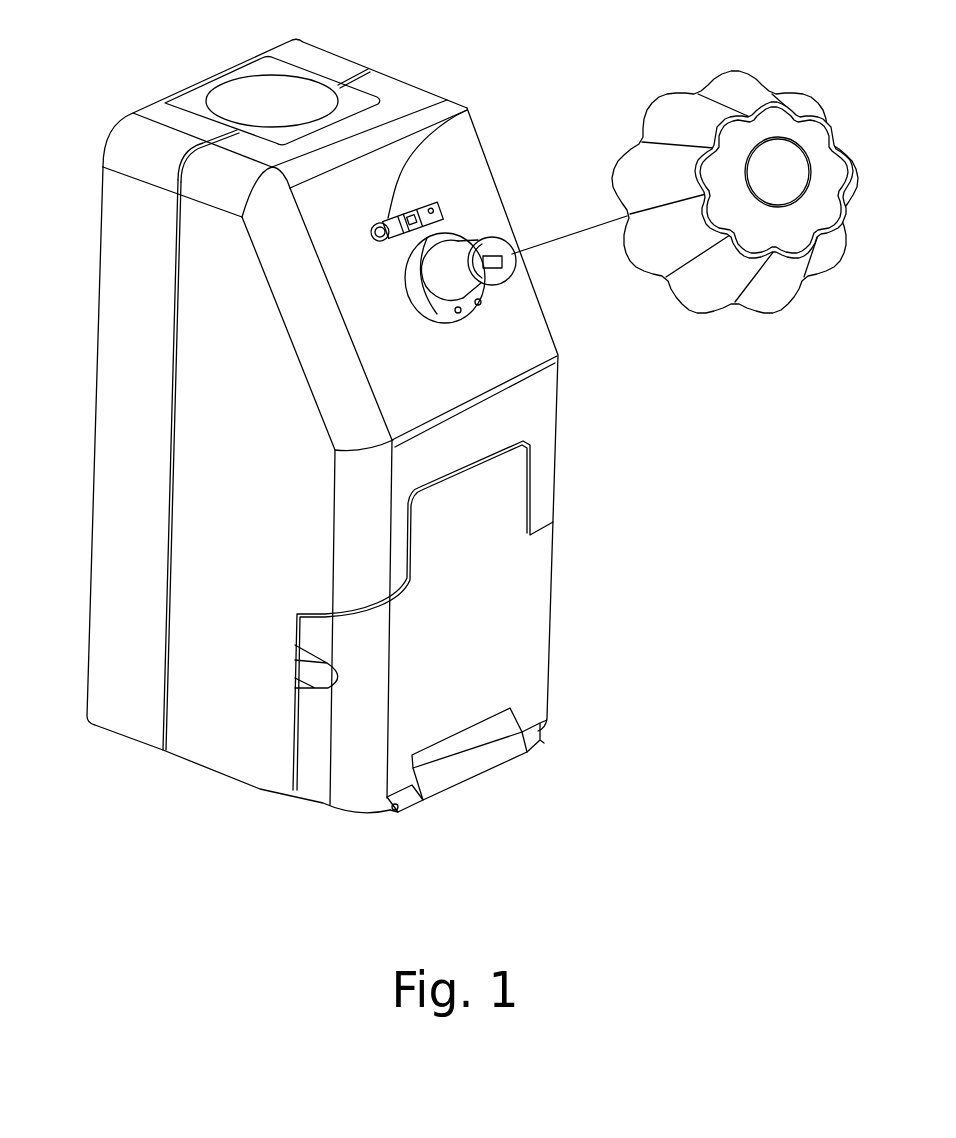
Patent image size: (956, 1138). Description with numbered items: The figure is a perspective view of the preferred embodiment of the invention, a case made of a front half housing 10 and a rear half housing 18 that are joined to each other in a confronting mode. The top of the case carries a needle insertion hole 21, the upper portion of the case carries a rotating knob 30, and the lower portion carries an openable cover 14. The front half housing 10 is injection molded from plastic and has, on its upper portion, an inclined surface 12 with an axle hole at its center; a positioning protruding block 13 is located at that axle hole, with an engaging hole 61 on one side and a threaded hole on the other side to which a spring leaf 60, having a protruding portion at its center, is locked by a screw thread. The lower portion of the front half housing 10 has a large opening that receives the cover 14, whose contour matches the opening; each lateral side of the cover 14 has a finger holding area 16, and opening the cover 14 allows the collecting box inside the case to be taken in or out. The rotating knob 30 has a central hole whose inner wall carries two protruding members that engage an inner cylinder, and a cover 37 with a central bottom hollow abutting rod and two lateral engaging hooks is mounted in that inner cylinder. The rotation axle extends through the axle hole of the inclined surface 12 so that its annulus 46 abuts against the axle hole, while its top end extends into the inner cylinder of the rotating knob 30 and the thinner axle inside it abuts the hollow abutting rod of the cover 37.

The front half housing 10 is at (193, 750).
The inclined surface 12 is at (482, 372).
The positioning protruding block 13 is at (467, 110).
The openable cover 14 is at (540, 605).
The finger holding area 16 is at (308, 677).
The rear half housing 18 is at (117, 255).
The needle insertion hole 21 is at (238, 88).
The rotating knob 30 is at (687, 92).
The cover 37 is at (793, 160).
The annulus 46 is at (478, 311).
The spring leaf 60 is at (412, 207).
The engaging hole 61 is at (435, 210).